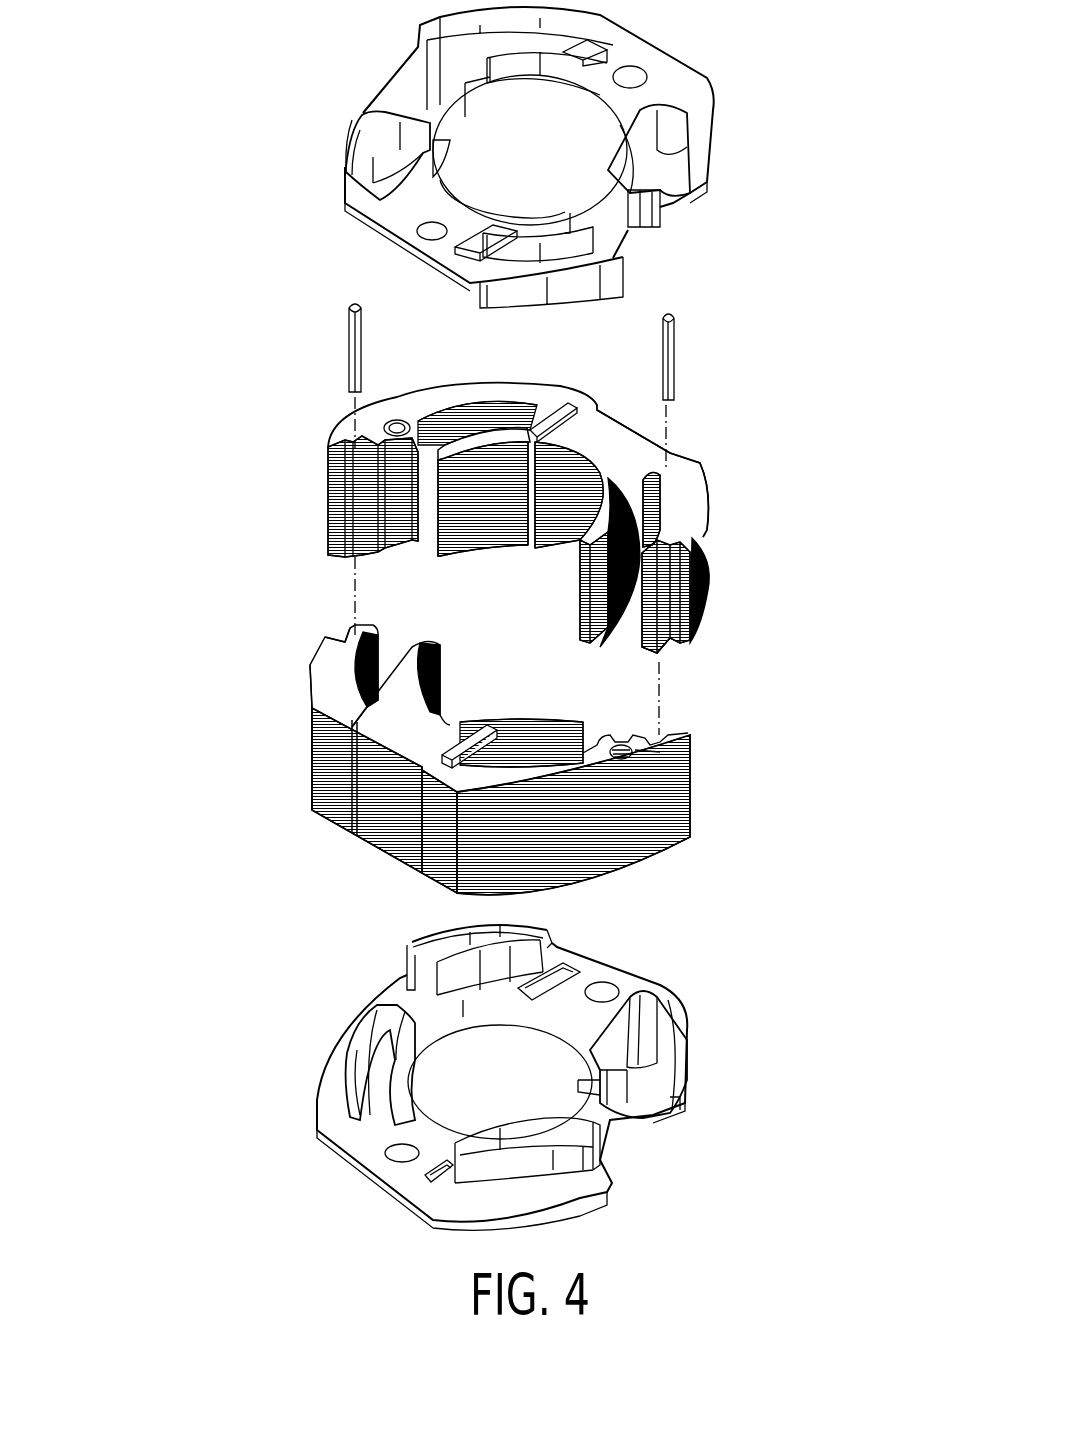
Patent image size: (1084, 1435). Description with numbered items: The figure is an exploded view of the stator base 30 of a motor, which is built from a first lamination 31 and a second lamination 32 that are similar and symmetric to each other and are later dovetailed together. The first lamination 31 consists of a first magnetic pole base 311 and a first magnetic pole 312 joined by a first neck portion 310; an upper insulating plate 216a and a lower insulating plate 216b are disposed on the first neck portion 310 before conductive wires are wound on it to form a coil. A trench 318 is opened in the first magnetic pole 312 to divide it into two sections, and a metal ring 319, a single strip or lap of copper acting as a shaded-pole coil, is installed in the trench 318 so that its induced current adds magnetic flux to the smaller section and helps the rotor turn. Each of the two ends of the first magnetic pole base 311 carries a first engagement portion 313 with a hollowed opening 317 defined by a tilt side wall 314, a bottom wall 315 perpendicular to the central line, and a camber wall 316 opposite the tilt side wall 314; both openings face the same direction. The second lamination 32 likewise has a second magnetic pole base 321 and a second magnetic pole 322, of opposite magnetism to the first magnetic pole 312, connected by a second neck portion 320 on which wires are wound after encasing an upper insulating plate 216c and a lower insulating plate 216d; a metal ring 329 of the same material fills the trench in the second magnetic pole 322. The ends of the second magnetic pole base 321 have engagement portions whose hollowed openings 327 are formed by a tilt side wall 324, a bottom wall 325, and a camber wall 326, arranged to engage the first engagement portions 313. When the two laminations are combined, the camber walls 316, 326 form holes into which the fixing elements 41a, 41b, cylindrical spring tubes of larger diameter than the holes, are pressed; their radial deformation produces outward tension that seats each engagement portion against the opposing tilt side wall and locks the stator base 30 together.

The stator base 30 is at (500, 1077).
The first lamination 31 is at (580, 522).
The second lamination 32 is at (452, 751).
The first neck portion 310 is at (670, 450).
The first magnetic pole base 311 is at (703, 458).
The first magnetic pole 312 is at (470, 445).
The first engagement portion 313 is at (687, 507).
The tilt side wall 314 is at (708, 542).
The bottom wall 315 is at (708, 608).
The camber wall 316 is at (640, 605).
The hollowed opening 317 is at (683, 661).
The trench 318 is at (530, 548).
The metal ring 319 is at (567, 403).
The second neck portion 320 is at (310, 757).
The second magnetic pole base 321 is at (383, 852).
The second magnetic pole 322 is at (430, 640).
The tilt side wall 324 is at (310, 660).
The bottom wall 325 is at (348, 633).
The camber wall 326 is at (360, 630).
The hollowed opening 327 is at (331, 626).
The metal ring 329 is at (492, 735).
The fixing element 41a is at (675, 330).
The fixing element 41b is at (349, 332).
The upper insulating plate 216a is at (705, 120).
The lower insulating plate 216b is at (688, 1072).
The upper insulating plate 216c is at (345, 160).
The lower insulating plate 216d is at (320, 1105).